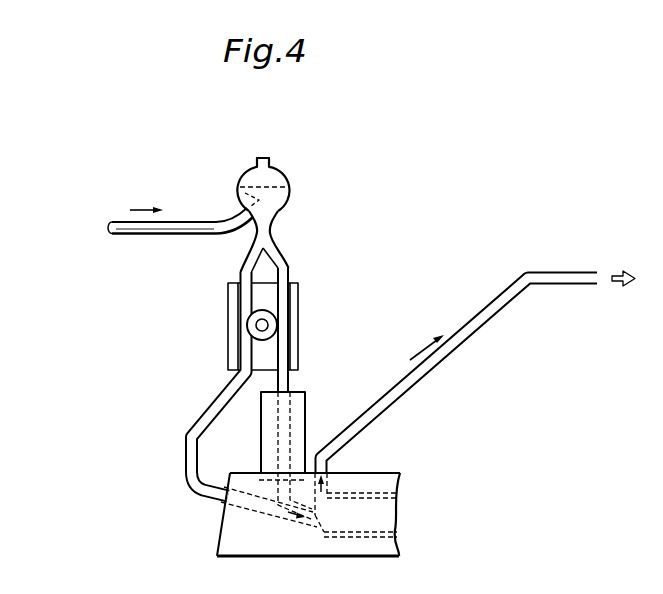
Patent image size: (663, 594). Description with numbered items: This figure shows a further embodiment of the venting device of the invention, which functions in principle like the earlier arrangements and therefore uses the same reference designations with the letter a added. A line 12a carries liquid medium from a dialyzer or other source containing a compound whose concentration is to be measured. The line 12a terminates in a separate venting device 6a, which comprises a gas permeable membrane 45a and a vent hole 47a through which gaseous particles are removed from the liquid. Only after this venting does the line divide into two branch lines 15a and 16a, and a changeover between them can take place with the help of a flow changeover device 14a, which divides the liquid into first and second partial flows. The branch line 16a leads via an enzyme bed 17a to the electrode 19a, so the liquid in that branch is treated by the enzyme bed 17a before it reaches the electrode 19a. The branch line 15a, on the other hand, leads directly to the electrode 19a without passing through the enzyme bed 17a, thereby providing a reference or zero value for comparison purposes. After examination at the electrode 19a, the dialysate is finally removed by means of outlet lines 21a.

The venting device 6a is at (288, 197).
The vent hole 47a is at (262, 158).
The gas permeable membrane 45a is at (266, 183).
The line 12a is at (172, 228).
The branch line 15a is at (245, 272).
The branch line 16a is at (282, 265).
The flow changeover device 14a is at (298, 328).
The enzyme bed 17a is at (306, 405).
The electrode 19a is at (388, 517).
The outlet lines 21a is at (412, 378).